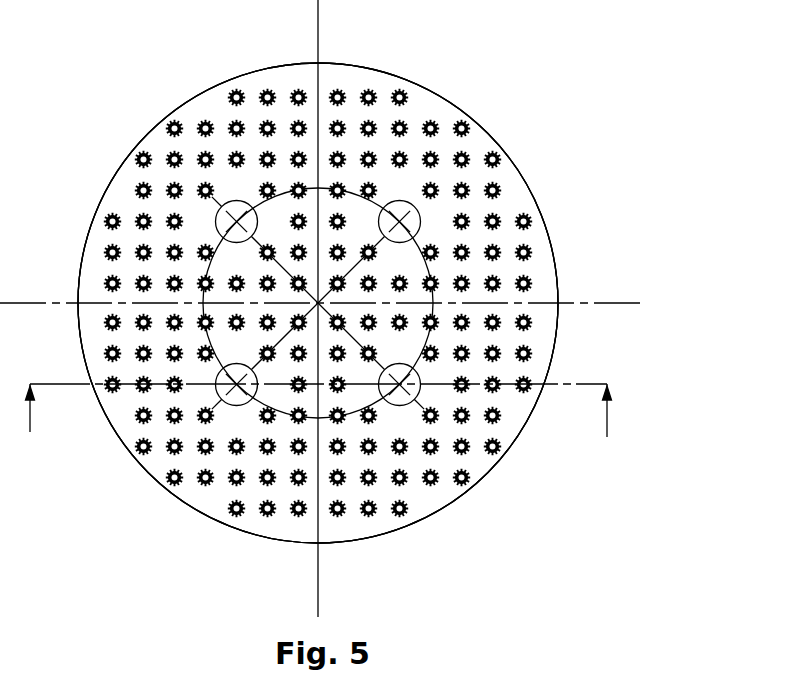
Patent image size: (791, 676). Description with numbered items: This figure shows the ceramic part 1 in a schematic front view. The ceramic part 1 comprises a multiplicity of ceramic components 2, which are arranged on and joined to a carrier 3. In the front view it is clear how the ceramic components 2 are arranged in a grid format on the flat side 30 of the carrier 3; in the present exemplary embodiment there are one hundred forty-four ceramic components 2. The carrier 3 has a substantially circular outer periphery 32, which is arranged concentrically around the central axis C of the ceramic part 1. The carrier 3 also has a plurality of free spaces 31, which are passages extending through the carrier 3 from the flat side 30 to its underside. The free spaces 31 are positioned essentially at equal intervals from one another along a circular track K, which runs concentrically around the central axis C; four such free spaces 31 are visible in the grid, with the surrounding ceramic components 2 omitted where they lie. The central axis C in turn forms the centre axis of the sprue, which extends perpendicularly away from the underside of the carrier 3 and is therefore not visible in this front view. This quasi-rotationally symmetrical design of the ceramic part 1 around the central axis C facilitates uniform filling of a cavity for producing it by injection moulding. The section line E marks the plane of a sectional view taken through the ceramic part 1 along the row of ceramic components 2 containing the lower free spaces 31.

The ceramic part 1 is at (334, 292).
The ceramic components 2 is at (318, 264).
The carrier 3 is at (365, 303).
The flat side 30 is at (340, 303).
The free spaces 31 is at (384, 266).
The outer periphery 32 is at (398, 308).
The circular track K is at (250, 284).
The central axis C is at (320, 266).
The section line E- E is at (306, 413).